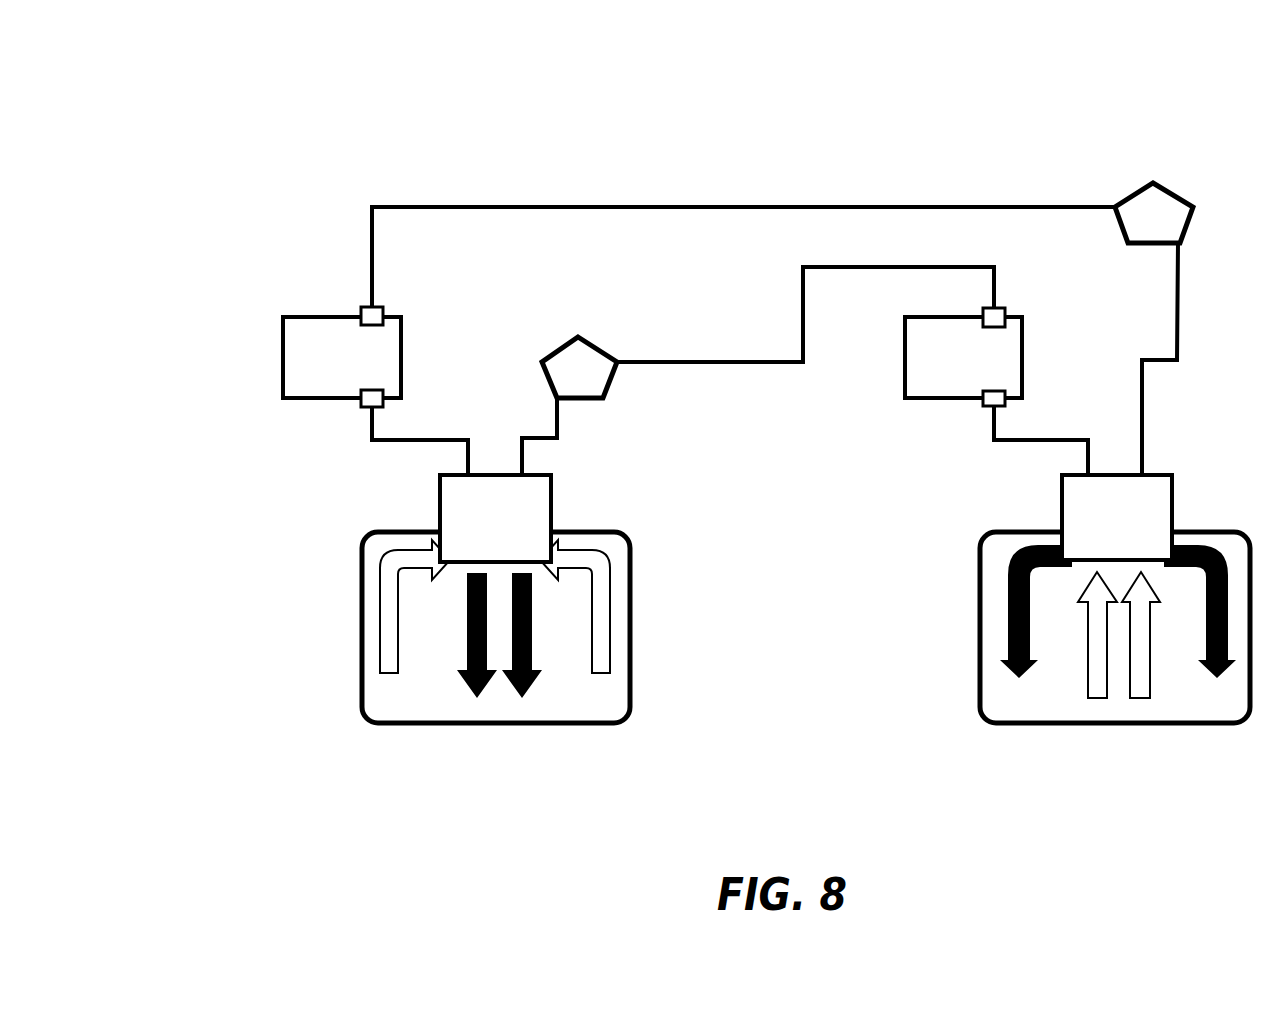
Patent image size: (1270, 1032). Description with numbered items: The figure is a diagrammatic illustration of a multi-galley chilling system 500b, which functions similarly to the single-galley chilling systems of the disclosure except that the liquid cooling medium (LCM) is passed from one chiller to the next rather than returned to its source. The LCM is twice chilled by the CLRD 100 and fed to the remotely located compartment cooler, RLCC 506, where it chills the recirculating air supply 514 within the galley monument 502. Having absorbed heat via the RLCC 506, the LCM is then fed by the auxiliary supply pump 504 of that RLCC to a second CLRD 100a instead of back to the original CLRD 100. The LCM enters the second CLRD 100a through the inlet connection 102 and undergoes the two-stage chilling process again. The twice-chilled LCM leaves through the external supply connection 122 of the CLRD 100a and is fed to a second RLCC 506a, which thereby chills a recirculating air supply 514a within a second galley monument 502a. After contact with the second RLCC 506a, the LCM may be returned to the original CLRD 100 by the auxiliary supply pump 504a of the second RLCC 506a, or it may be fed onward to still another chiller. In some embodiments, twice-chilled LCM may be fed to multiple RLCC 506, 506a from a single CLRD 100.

The multi-galley chilling system 500b is at (206, 109).
The CLRD 100 is at (363, 377).
The second CLRD 100a is at (993, 377).
The inlet connection 102 is at (1003, 314).
The external supply connection 122 is at (989, 403).
The auxiliary supply pump 504 is at (575, 375).
The auxiliary supply pump 504a is at (1165, 218).
The remotely located compartment cooler 506 is at (516, 536).
The second RLCC 506a is at (1144, 538).
The galley monument 502 is at (630, 623).
The second galley monument 502a is at (978, 625).
The recirculating air supply 514 is at (390, 590).
The recirculating air supply 514a is at (1098, 655).